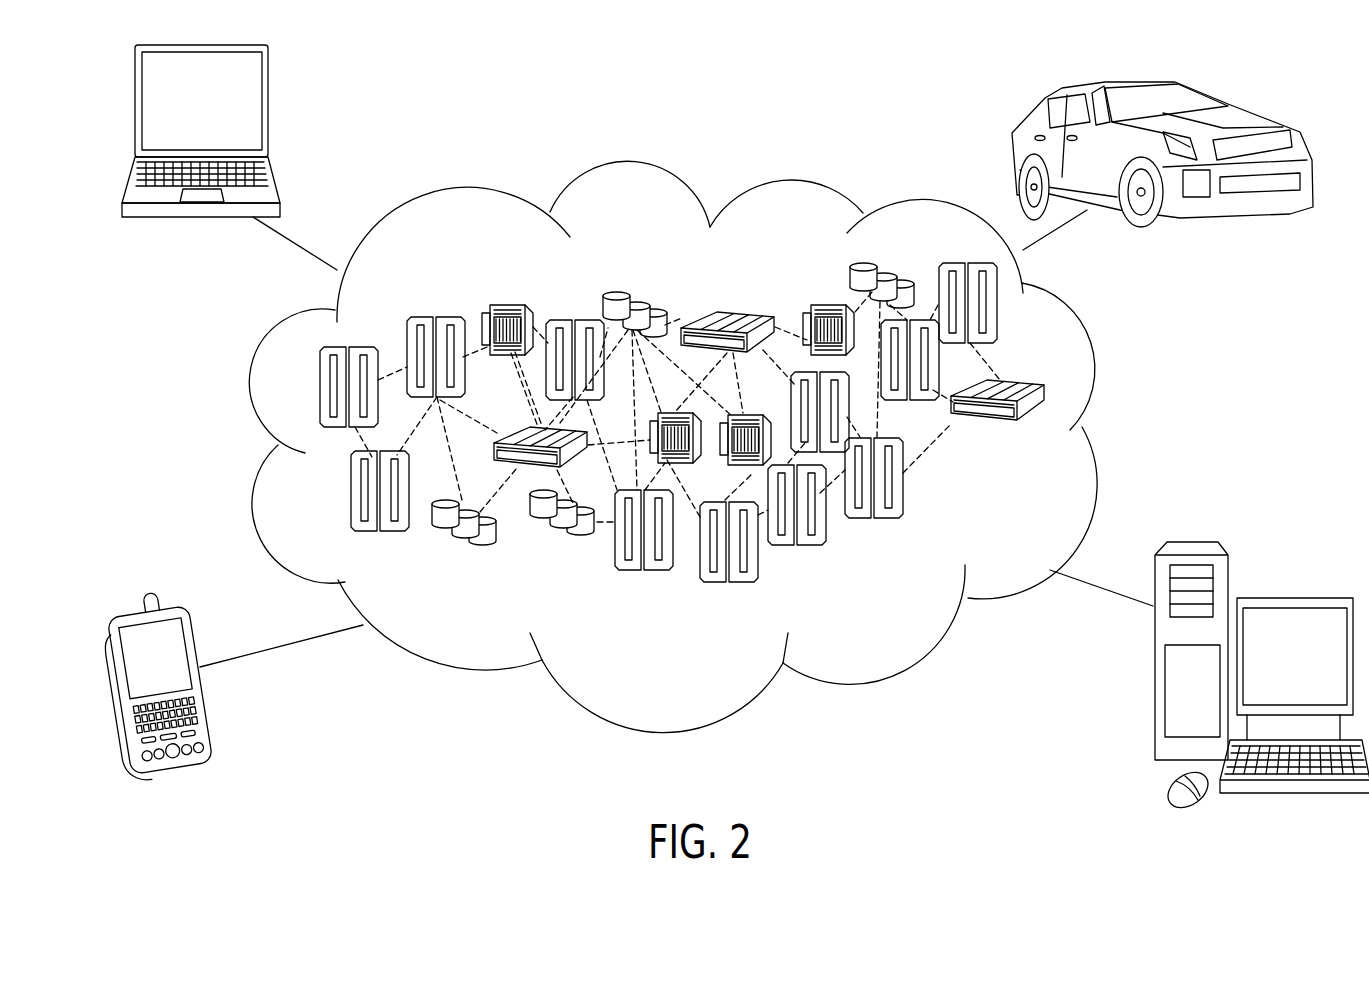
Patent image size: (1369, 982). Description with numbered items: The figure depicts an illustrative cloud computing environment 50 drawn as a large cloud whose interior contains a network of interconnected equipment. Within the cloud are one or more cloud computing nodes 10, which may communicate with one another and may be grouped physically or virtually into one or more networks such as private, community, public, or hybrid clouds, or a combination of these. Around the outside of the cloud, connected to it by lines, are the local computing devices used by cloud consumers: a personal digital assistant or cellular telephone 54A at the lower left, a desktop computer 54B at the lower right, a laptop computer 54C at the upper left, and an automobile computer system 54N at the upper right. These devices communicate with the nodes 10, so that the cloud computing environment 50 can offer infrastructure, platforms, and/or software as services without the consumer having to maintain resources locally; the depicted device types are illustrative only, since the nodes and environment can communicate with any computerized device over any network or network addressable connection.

The cloud computing node 10 is at (1033, 418).
The cloud computing environment 50 is at (1094, 358).
The personal digital assistant or cellular telephone 54A is at (108, 695).
The desktop computer 54B is at (1290, 597).
The laptop computer 54C is at (135, 110).
The automobile computer system 54N is at (1217, 100).